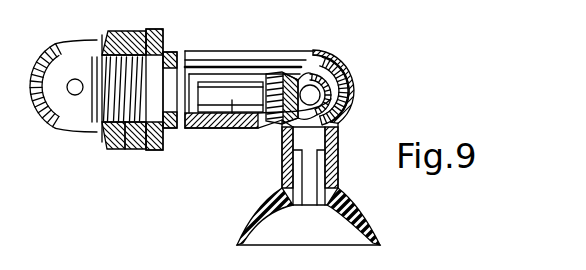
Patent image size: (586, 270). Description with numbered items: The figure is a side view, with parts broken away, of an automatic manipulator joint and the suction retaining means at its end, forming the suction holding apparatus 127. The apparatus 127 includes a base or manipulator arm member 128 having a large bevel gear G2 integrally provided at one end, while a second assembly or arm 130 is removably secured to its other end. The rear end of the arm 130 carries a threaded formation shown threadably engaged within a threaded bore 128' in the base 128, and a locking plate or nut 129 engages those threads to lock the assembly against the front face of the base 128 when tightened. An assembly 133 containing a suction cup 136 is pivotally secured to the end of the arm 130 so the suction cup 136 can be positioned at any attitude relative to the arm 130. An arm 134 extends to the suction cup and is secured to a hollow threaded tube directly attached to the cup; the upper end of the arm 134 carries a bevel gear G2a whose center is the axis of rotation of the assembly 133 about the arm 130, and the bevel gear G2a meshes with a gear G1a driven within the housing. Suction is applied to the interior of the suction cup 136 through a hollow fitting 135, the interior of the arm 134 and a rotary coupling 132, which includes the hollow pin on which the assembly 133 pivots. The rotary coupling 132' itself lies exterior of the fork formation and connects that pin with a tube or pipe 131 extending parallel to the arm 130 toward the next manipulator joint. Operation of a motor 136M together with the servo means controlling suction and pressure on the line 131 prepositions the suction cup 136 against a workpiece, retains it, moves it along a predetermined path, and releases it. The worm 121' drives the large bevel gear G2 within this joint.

The suction holding apparatus 127 is at (122, 208).
The large bevel gear G2 is at (52, 132).
The worm 121' is at (111, 72).
The base or manipulator arm member 128 is at (96, 154).
The threaded bore 128' is at (124, 154).
The locking plate or nut 129 is at (157, 151).
The second assembly or arm 130 is at (123, 37).
The tube or pipe 131 is at (191, 52).
The motor 136M is at (232, 128).
The drive gear G1a is at (261, 72).
The bevel gear G2a is at (331, 62).
The rotary coupling 132 is at (359, 87).
The rotary coupling 132' is at (359, 88).
The arm 134 is at (338, 163).
The hollow fitting 135 is at (287, 181).
The suction cup 136 is at (250, 218).
The assembly 133 is at (340, 183).